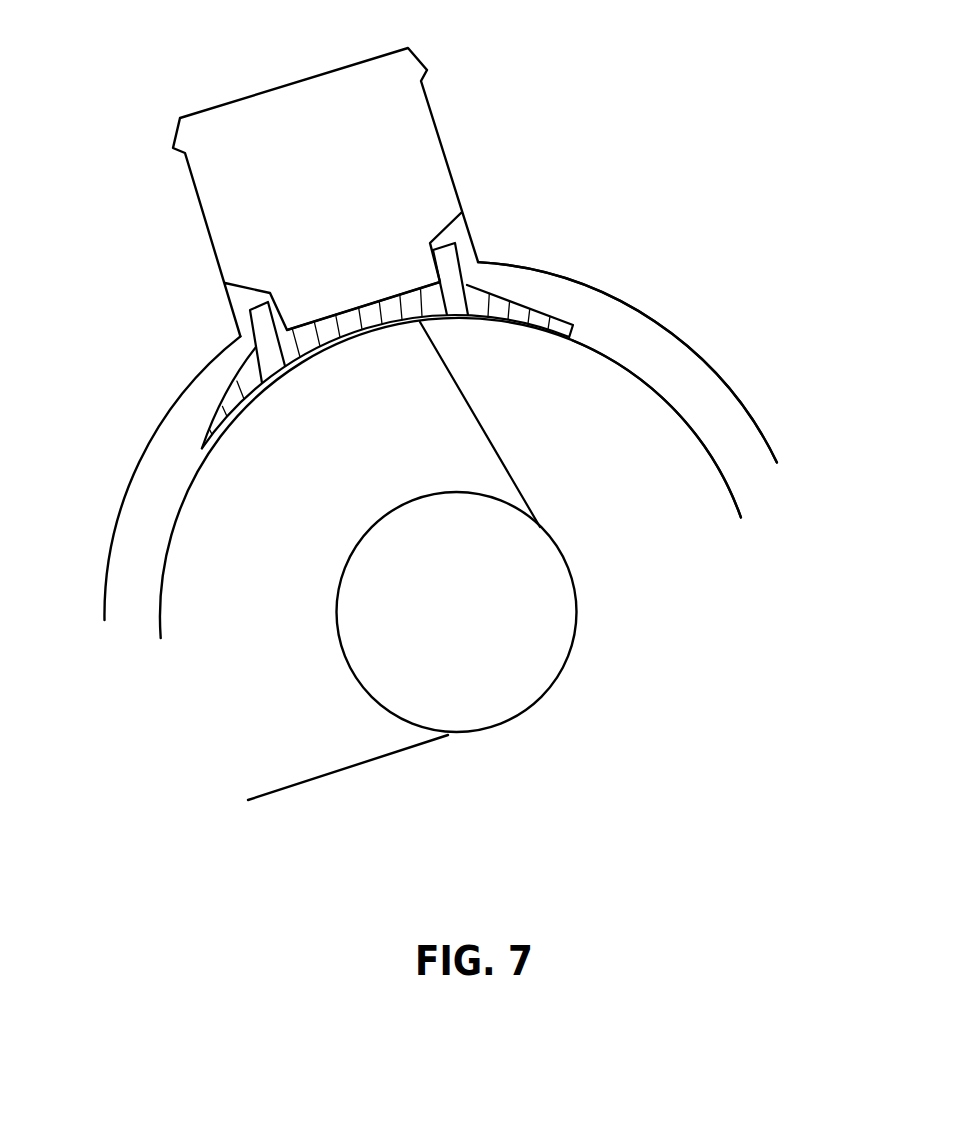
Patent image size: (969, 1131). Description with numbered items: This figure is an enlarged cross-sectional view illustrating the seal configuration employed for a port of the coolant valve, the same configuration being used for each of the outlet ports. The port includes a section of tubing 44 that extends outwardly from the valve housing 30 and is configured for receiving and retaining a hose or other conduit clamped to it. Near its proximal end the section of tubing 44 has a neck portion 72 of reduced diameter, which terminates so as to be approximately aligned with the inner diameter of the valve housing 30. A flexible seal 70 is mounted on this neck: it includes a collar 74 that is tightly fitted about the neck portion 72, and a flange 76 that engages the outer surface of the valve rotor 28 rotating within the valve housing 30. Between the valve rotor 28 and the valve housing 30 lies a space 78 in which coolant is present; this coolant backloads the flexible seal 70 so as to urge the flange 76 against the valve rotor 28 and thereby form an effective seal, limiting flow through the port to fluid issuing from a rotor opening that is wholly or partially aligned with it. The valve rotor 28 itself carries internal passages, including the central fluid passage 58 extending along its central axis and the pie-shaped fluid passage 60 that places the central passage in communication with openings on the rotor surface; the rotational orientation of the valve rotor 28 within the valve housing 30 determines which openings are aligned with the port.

The section of tubing 44 is at (442, 142).
The neck portion 72 is at (282, 318).
The collar 74 is at (248, 318).
The flange 76 is at (216, 420).
The flexible seal 70 is at (295, 362).
The space 78 is at (648, 350).
The valve rotor 28 is at (675, 408).
The valve housing 30 is at (763, 427).
The central fluid passage 58 is at (577, 592).
The pie-shaped fluid passage 60 is at (273, 787).